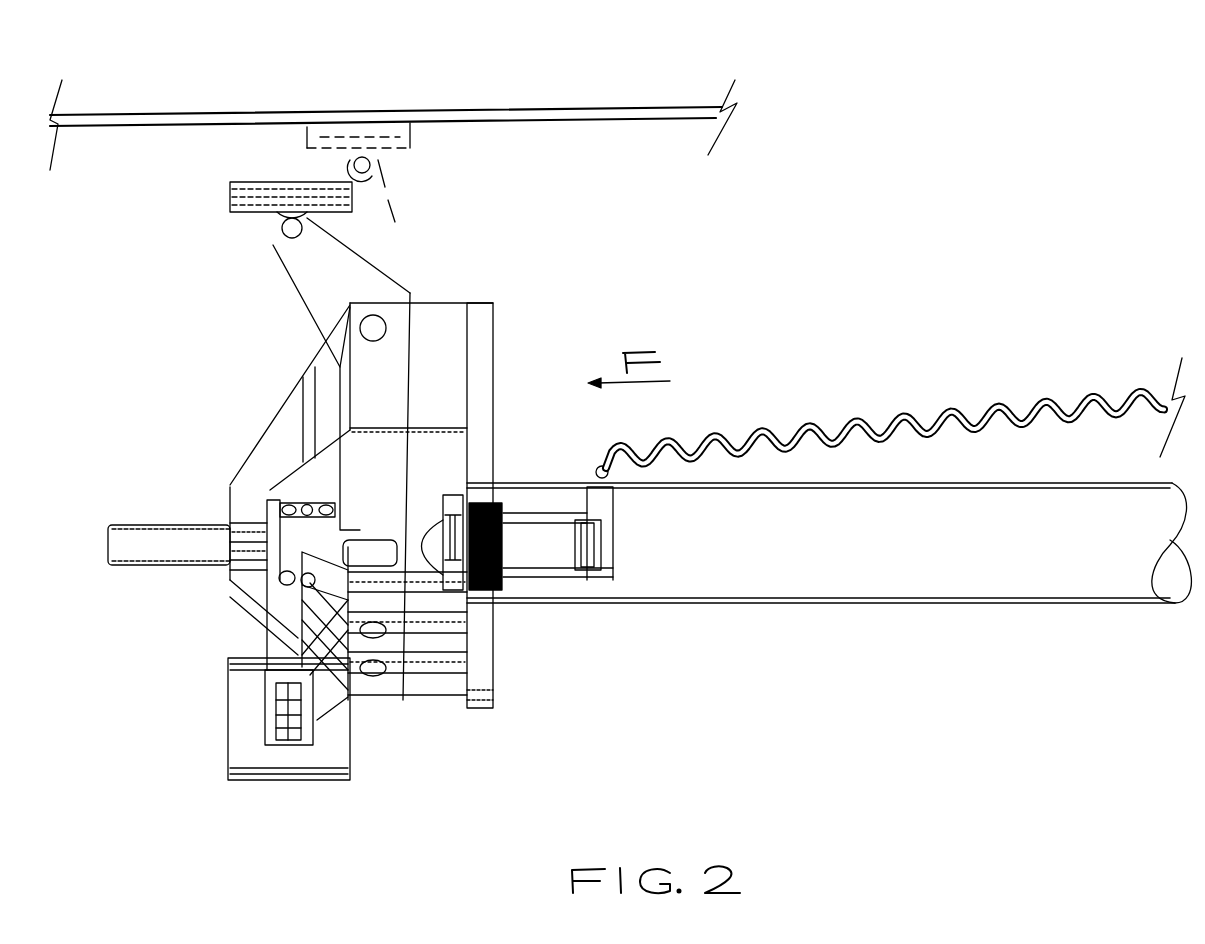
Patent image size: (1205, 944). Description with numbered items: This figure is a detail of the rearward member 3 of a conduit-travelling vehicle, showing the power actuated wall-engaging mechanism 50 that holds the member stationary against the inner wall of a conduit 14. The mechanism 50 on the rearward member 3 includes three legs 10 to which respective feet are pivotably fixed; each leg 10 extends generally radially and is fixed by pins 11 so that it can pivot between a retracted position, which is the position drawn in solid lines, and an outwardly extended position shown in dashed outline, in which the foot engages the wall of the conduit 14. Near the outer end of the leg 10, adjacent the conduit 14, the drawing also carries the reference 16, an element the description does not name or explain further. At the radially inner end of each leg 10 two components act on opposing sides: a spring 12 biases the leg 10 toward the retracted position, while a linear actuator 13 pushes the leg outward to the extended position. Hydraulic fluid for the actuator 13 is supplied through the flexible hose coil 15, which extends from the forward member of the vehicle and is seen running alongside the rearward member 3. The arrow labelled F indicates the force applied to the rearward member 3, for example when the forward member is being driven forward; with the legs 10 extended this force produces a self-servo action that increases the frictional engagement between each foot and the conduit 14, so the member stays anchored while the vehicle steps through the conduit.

The rearward member 3 is at (346, 540).
The leg 10 is at (411, 274).
The pin 11 is at (484, 319).
The spring 12 is at (231, 453).
The linear actuator 13 is at (829, 593).
The conduit 14 is at (393, 144).
The flexible hose coil 15 is at (890, 397).
The pin roller 16 is at (410, 121).
The wall-engaging mechanism 50 is at (205, 540).